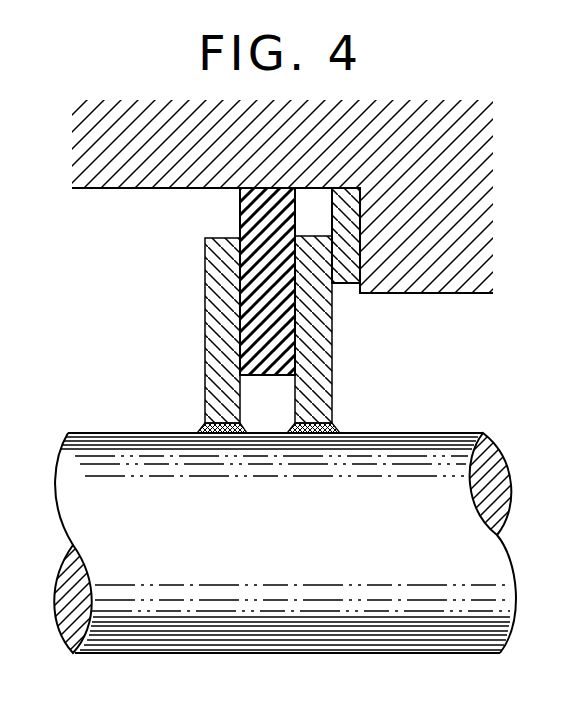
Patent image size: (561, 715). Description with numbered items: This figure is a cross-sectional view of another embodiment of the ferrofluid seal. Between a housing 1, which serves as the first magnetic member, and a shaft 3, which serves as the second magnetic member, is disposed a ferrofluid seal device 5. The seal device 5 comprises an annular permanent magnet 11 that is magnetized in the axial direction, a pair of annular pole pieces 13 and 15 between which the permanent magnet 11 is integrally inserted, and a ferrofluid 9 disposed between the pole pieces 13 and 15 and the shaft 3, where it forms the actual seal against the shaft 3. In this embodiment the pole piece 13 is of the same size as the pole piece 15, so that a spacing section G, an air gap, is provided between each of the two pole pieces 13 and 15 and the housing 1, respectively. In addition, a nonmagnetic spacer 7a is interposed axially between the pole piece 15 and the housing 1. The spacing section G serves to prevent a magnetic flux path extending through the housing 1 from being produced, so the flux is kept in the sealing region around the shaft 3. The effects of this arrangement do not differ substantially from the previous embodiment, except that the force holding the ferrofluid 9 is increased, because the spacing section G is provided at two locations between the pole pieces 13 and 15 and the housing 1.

The housing 1 is at (490, 173).
The shaft 3 is at (452, 443).
The ferrofluid seal device 5 is at (264, 310).
The nonmagnetic spacer 7a is at (345, 285).
The ferrofluid 9 is at (200, 423).
The permanent magnet 11 is at (247, 323).
The pole piece 13 is at (217, 273).
The pole piece 15 is at (328, 388).
The spacing section G is at (308, 207).